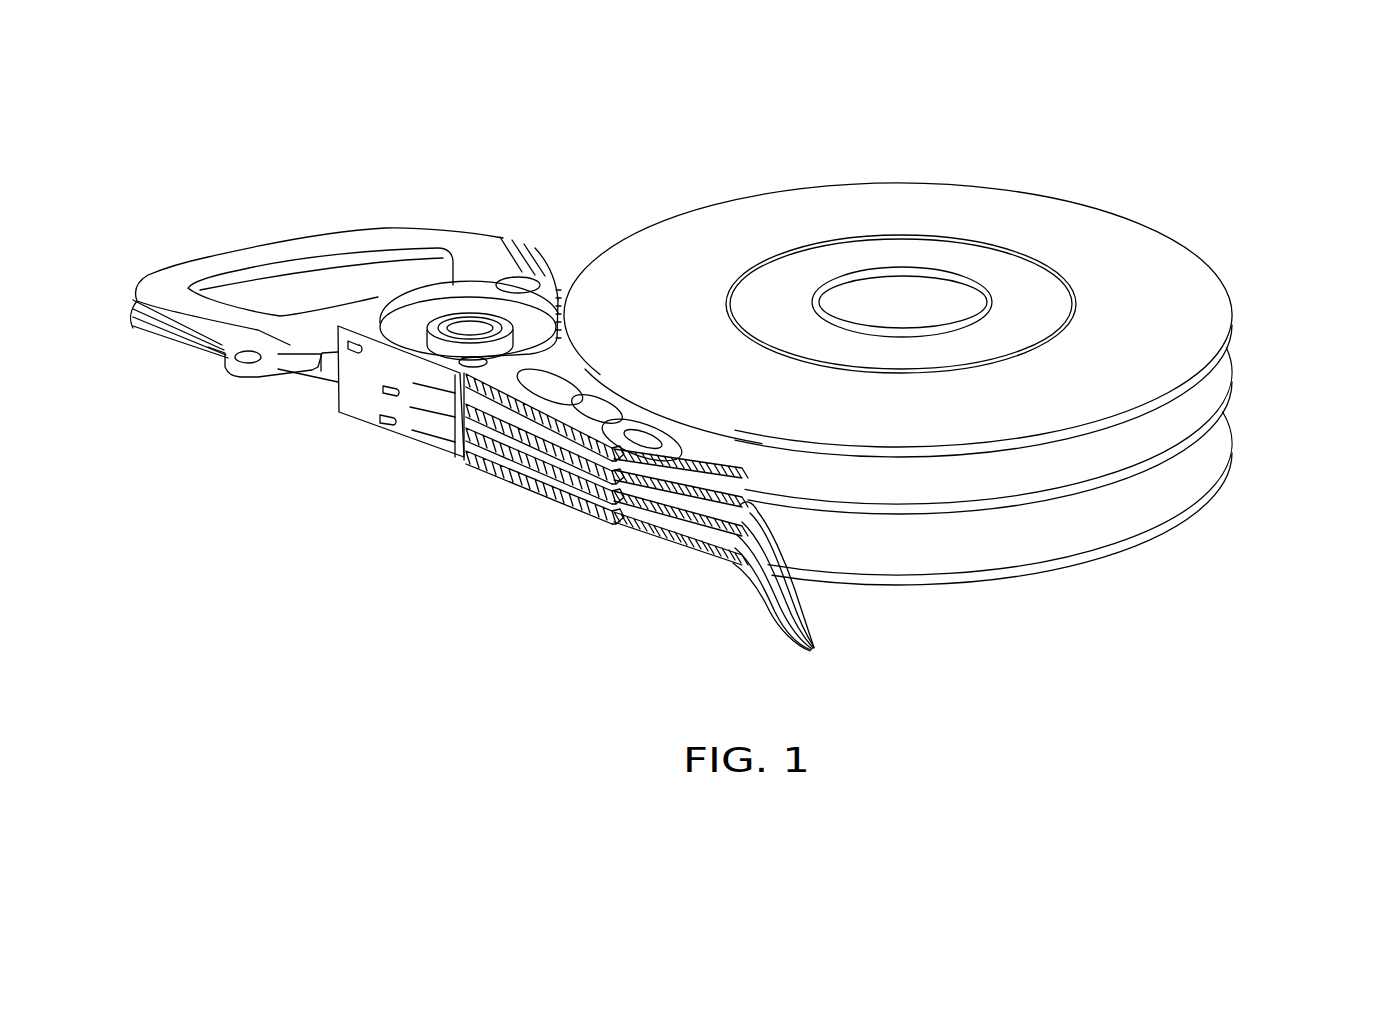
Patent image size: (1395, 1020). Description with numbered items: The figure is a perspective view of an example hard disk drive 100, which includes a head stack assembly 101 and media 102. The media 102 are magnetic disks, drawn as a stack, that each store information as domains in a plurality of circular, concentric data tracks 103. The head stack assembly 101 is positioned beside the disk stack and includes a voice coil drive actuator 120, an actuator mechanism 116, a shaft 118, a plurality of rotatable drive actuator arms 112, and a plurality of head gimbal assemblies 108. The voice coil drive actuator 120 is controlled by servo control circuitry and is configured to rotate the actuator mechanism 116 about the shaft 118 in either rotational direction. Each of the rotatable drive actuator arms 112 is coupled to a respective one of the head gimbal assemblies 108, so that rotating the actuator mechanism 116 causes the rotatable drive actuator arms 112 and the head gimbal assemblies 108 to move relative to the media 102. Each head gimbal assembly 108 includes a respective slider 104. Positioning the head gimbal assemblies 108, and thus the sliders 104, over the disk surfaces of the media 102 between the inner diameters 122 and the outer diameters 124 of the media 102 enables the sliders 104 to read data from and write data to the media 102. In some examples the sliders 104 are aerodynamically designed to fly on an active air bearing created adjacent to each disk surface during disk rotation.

The hard disk drive 100 is at (1236, 186).
The head stack assembly 101 is at (585, 562).
The media 102 is at (1062, 183).
The data tracks 103 is at (1073, 303).
The slider 104 is at (796, 580).
The head gimbal assembly 108 is at (736, 462).
The rotatable drive actuator arm 112 is at (497, 445).
The actuator mechanism 116 is at (562, 243).
The shaft 118 is at (472, 322).
The voice coil drive actuator 120 is at (281, 236).
The inner diameter 122 is at (896, 328).
The outer diameter 124 is at (845, 182).